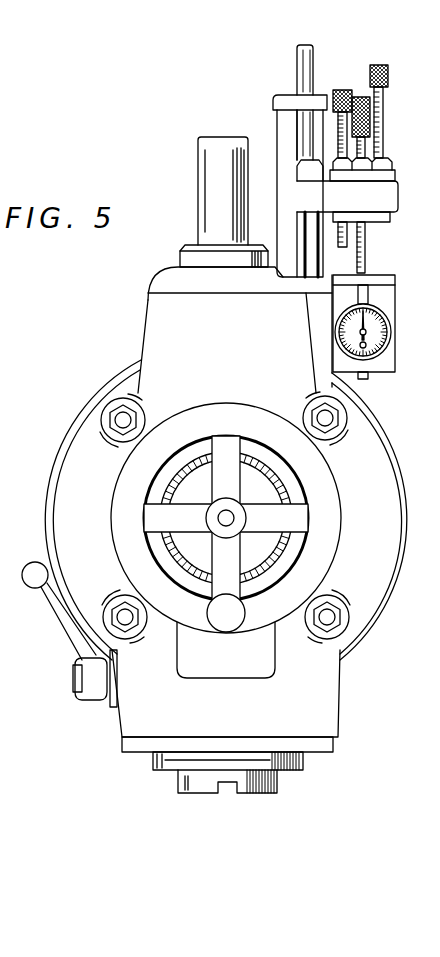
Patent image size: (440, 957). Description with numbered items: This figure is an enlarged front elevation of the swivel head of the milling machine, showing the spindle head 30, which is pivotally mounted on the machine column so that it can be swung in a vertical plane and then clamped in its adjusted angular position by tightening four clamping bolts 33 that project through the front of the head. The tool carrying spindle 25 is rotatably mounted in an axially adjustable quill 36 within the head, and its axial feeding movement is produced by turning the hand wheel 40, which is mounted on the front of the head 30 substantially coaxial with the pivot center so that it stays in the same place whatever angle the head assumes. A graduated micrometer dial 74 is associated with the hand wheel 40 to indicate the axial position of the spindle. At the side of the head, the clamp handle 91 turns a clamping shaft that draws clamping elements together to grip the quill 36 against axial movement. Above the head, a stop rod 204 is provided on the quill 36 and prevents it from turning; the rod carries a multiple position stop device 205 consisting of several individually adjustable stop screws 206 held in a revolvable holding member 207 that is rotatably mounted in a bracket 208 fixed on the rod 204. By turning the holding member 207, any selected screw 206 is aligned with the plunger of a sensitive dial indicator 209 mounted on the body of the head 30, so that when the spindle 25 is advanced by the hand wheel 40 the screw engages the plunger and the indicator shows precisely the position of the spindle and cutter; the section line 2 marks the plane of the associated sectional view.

The section line 2- 2 is at (262, 100).
The tool carrying spindle 25 is at (207, 784).
The spindle head 30 is at (122, 336).
The clamping bolts 33 is at (139, 405).
The quill 36 is at (190, 758).
The hand wheel 40 is at (330, 498).
The graduated micrometer dial 74 is at (146, 513).
The clamp handle 91 is at (74, 637).
The stop rod 204 is at (305, 66).
The multiple position stop device 205 is at (404, 172).
The stop screws 206 is at (384, 113).
The revolvable holding member 207 is at (372, 175).
The bracket 208 is at (392, 199).
The dial indicator 209 is at (375, 347).